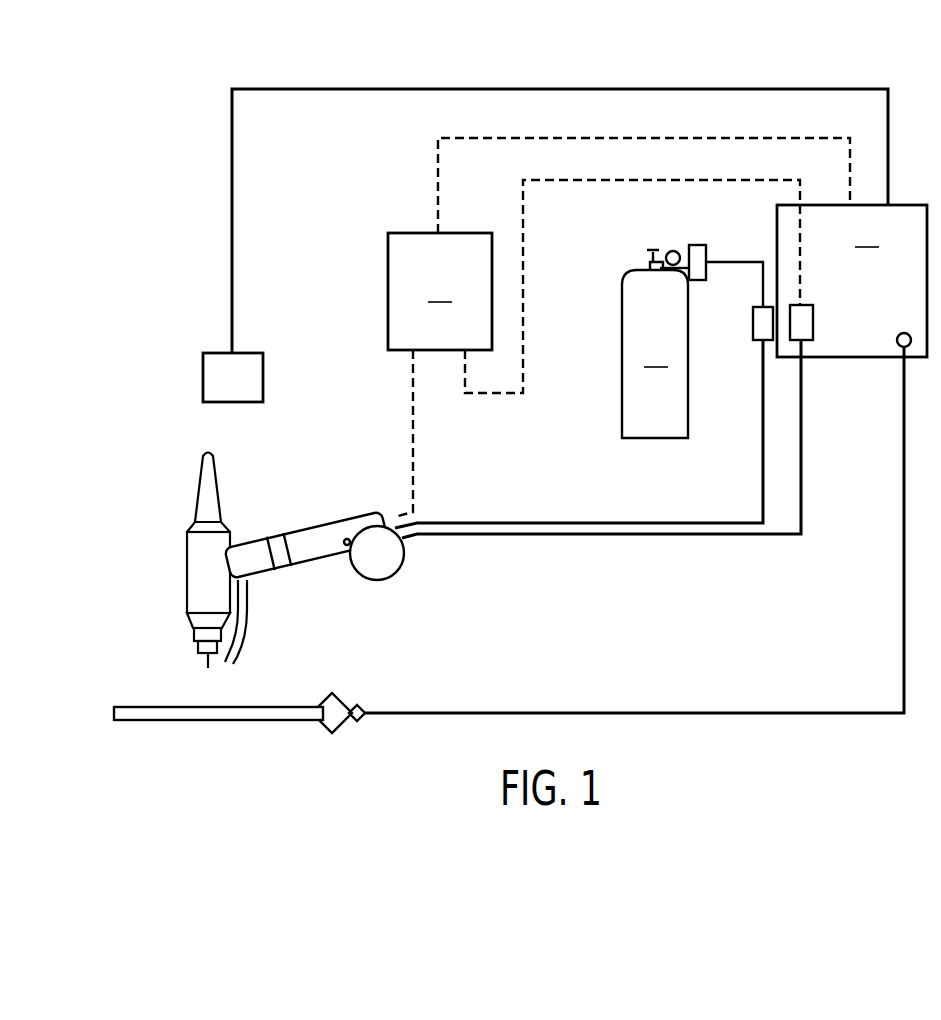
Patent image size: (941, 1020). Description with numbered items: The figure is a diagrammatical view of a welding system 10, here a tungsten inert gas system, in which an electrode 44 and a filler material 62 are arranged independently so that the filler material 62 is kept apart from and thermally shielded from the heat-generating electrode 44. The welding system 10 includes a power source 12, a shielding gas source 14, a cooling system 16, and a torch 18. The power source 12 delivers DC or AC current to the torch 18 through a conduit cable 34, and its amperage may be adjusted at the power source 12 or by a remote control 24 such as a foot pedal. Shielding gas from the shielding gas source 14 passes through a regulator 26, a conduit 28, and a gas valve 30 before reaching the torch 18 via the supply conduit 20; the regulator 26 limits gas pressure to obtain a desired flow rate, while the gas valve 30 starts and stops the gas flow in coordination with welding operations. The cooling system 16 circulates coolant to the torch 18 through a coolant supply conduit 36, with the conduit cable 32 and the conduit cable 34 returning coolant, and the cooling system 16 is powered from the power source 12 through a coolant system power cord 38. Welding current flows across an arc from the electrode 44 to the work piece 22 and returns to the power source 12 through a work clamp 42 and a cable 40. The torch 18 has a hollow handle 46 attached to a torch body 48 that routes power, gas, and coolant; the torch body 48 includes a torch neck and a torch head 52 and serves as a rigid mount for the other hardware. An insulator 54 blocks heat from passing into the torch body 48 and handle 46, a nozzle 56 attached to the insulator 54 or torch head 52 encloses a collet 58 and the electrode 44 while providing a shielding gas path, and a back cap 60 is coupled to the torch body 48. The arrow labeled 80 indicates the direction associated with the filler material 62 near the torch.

The welding system 10 is at (182, 181).
The power source 12 is at (852, 281).
The shielding gas source 14 is at (655, 350).
The cooling system 16 is at (440, 291).
The torch 18 is at (252, 562).
The supply conduit 20 is at (700, 522).
The work piece 22 is at (218, 722).
The remote control 24 is at (227, 382).
The regulator 26 is at (678, 245).
The conduit 28 is at (747, 260).
The gas valve 30 is at (750, 323).
The conduit cable 32 is at (483, 397).
The conduit cable 34 is at (660, 537).
The coolant supply conduit 36 is at (412, 430).
The coolant system power cord 38 is at (645, 135).
The cable 40 is at (613, 712).
The work clamp 42 is at (340, 728).
The electrode 44 is at (208, 662).
The handle 46 is at (314, 568).
The torch body 48 is at (181, 562).
The torch head 52 is at (203, 575).
The insulator 54 is at (190, 527).
The nozzle 56 is at (198, 640).
The collet 58 is at (200, 652).
The back cap 60 is at (218, 473).
The filler material 62 is at (228, 660).
The torch cable direction 80 is at (252, 625).